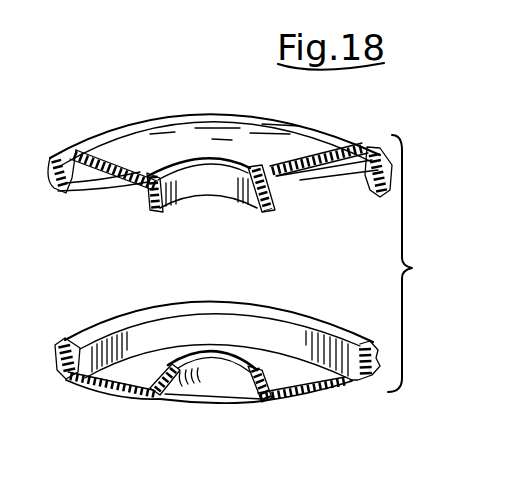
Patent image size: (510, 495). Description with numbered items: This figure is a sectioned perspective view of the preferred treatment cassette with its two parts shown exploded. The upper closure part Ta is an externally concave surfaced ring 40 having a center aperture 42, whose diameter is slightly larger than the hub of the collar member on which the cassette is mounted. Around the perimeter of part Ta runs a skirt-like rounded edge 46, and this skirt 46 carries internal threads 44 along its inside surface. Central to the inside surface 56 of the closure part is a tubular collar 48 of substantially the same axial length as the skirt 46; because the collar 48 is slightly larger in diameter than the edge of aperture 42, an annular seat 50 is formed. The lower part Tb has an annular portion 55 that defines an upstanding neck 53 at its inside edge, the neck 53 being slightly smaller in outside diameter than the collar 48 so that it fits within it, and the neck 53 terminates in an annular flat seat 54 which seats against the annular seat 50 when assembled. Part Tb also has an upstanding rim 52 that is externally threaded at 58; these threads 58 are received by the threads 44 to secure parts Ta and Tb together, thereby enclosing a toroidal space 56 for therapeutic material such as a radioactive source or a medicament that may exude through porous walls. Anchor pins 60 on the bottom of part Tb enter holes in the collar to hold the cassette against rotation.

The closure part Ta is at (110, 135).
The externally concave surfaced ring 40 is at (148, 145).
The center hole or aperture 42 is at (203, 157).
The internal threads 44 is at (82, 178).
The skirt-like rounded edge 46 is at (382, 203).
The tubular collar 48 is at (272, 200).
The annular seat 50 is at (177, 198).
The inside surface / toroidal space 56 is at (133, 180).
The lower cassette part Tb is at (88, 322).
The upstanding rim or edge 52 is at (135, 314).
The upstanding neck 53 is at (263, 367).
The annular flat seat 54 is at (232, 353).
The annular portion 55 is at (226, 377).
The external threads 58 is at (66, 355).
The anchor pins 60 is at (103, 398).